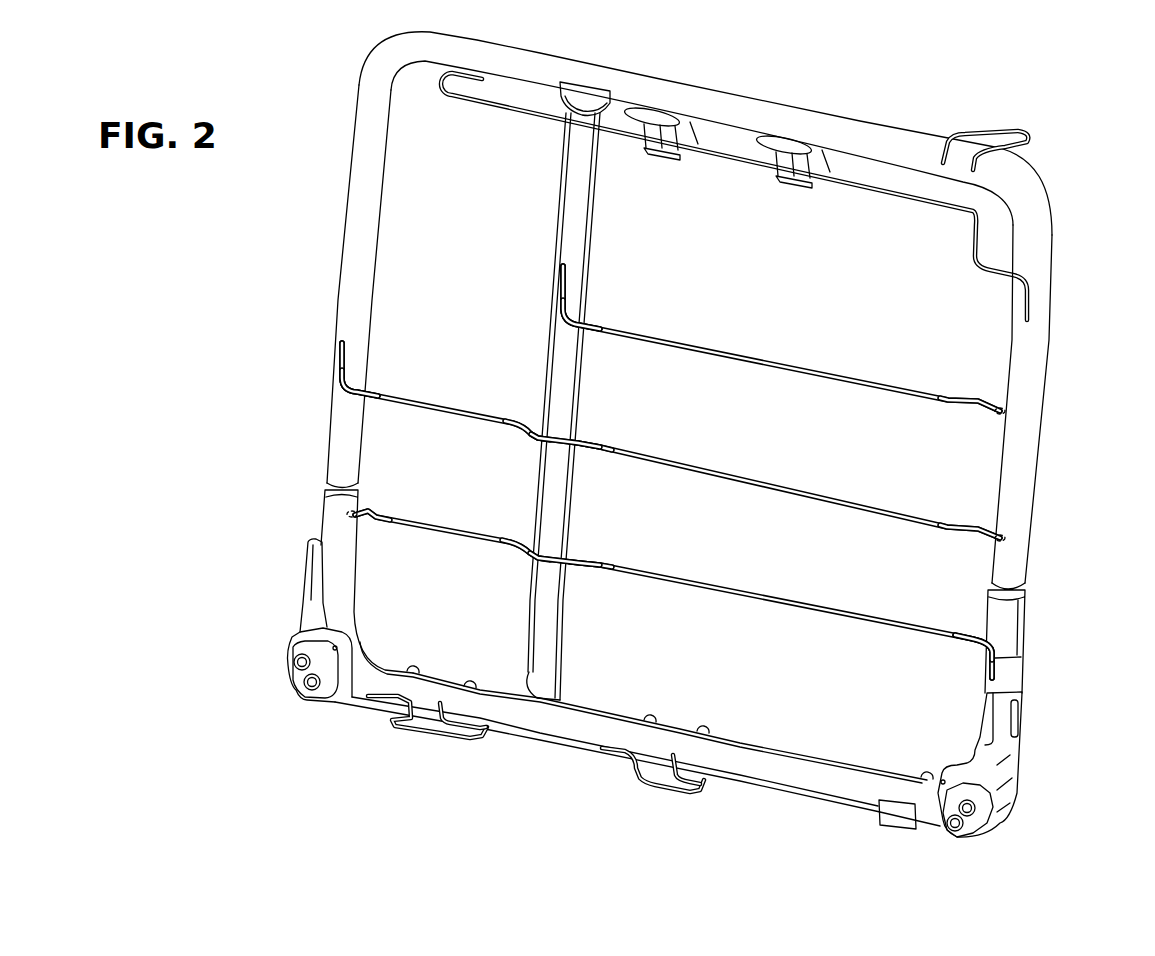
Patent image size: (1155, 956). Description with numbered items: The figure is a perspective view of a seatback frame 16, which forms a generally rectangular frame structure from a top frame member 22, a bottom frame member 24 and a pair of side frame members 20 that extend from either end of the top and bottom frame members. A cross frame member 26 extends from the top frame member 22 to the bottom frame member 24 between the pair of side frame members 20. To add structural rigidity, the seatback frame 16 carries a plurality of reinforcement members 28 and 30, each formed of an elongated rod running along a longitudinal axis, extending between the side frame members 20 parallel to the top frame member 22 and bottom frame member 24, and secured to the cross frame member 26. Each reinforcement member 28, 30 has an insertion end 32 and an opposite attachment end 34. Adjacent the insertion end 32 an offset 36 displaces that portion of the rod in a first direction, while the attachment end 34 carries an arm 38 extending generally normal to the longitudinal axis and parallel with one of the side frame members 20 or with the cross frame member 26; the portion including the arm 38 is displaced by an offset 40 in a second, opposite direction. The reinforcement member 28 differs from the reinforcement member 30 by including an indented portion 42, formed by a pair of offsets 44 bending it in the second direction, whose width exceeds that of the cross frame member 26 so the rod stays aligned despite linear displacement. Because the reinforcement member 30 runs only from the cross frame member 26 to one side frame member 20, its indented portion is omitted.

The seatback frame 16 is at (918, 120).
The side frame members 20 is at (355, 228).
The top frame member 22 is at (780, 106).
The bottom frame member 24 is at (573, 722).
The cross frame member 26 is at (585, 208).
The reinforcement member 28 is at (778, 452).
The reinforcement member 30 is at (795, 356).
The insertion end 32 is at (1020, 412).
The attachment end 34 is at (550, 287).
The offset 36 is at (958, 397).
The arm 38 is at (558, 282).
The offset 40 is at (586, 317).
The indented portion 42 is at (556, 470).
The offsets 44 is at (525, 438).